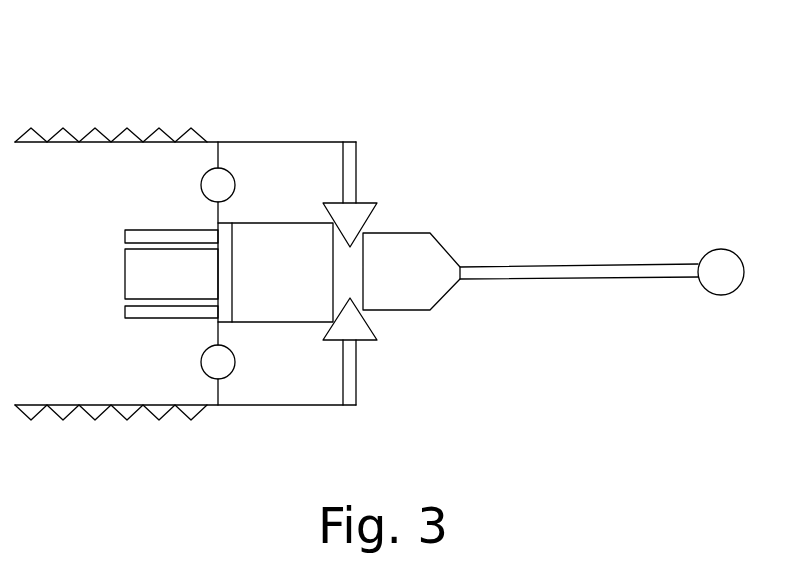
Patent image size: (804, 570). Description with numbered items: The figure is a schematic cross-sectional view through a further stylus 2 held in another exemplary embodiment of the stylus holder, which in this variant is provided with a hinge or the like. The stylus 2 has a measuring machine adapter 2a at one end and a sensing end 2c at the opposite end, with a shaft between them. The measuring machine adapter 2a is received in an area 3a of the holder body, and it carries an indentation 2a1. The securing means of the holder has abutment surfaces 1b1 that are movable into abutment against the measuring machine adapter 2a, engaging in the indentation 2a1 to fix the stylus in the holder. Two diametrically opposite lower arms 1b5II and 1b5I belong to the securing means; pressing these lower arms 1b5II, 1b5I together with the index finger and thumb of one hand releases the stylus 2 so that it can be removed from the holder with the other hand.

The stylus 2 is at (280, 142).
The lower arm 1b5II is at (94, 128).
The lower arm 1b5I is at (123, 420).
The area 3a is at (144, 233).
The measuring machine adapter 2a is at (309, 292).
The abutment surfaces 1b1 is at (362, 210).
The indentation 2a1 is at (348, 277).
The sensing end 2c is at (720, 270).